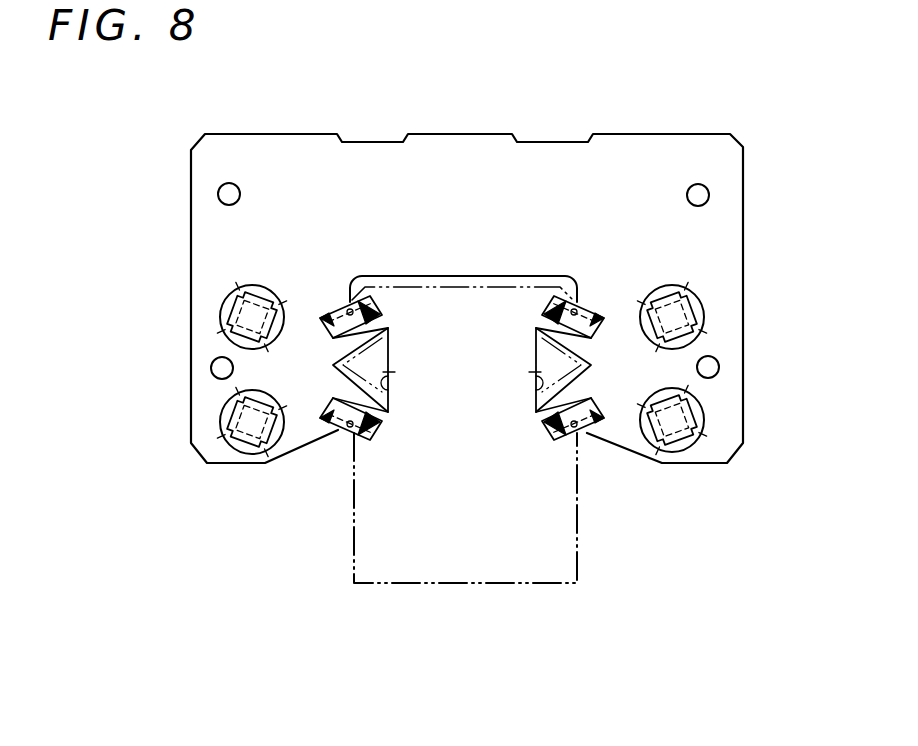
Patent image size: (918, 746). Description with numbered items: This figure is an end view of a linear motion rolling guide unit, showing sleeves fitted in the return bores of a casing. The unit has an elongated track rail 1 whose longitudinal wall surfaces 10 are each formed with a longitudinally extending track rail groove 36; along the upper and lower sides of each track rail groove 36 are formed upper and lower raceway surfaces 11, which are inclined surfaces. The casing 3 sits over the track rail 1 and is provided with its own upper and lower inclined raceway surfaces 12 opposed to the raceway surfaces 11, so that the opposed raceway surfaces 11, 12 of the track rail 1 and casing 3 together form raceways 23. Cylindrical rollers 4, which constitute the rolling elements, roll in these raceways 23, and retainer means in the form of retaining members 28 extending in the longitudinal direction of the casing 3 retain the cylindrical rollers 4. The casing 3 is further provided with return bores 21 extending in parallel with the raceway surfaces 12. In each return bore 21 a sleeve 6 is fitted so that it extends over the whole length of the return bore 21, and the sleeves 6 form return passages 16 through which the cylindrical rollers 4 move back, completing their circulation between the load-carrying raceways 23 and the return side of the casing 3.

The track rail 1 is at (498, 465).
The casing 3 is at (517, 192).
The cylindrical roller 4 is at (350, 308).
The sleeve 6 is at (221, 327).
The longitudinal wall surface 10 is at (578, 493).
The raceway surface of the track rail 11 is at (372, 325).
The raceway surface of the casing 12 is at (340, 310).
The return passage 16 is at (232, 297).
The return bore 21 is at (240, 290).
The raceway 23 is at (349, 310).
The retaining member 28 is at (395, 372).
The track rail groove 36 is at (388, 406).